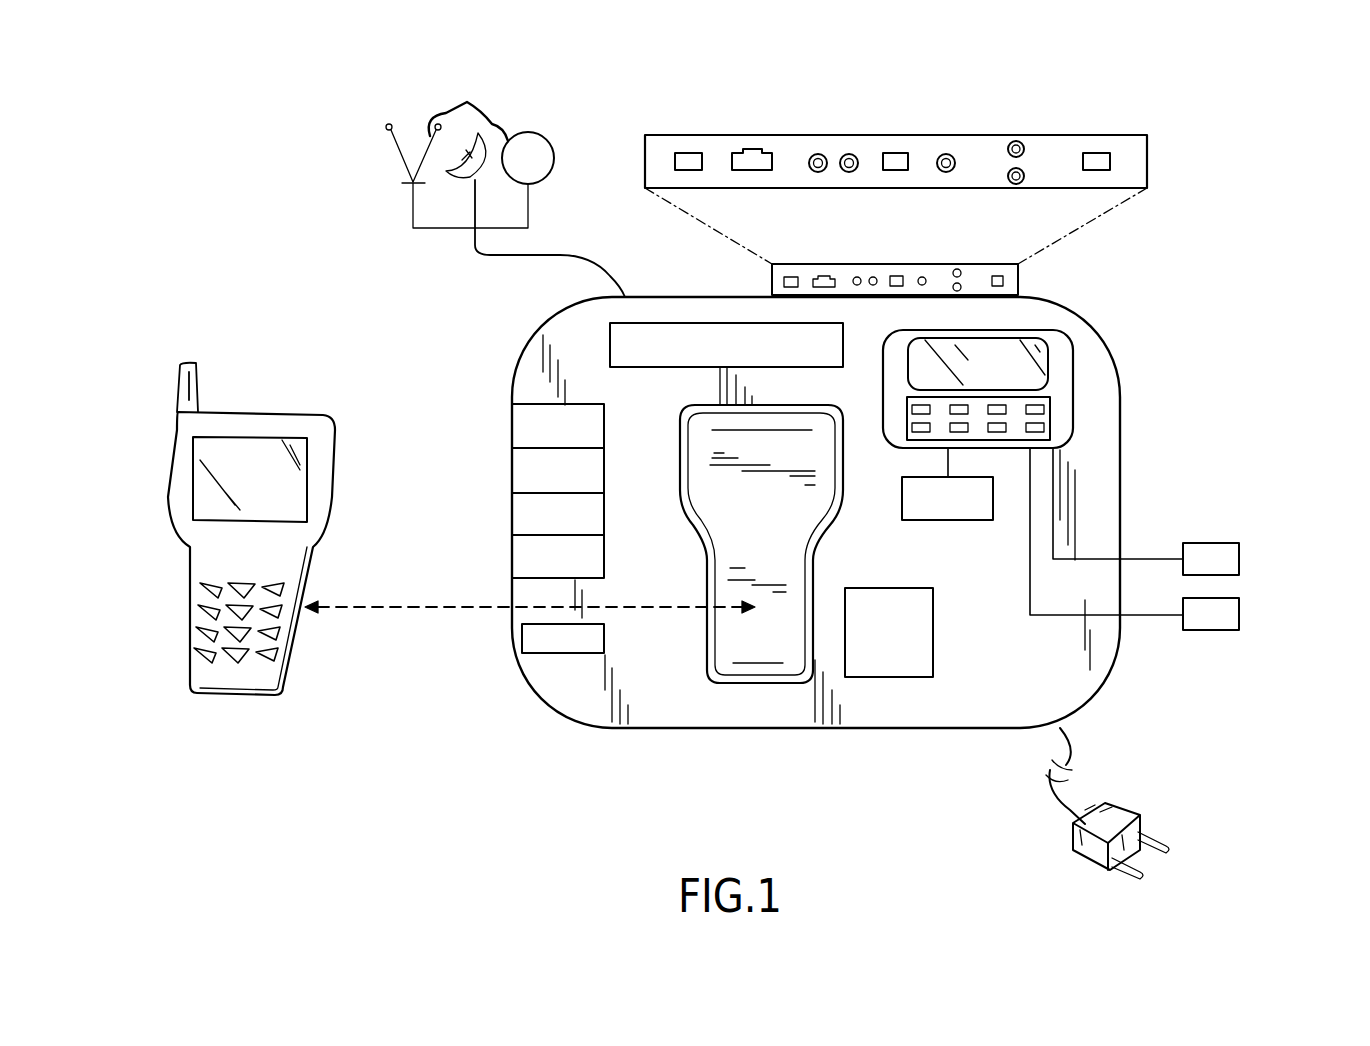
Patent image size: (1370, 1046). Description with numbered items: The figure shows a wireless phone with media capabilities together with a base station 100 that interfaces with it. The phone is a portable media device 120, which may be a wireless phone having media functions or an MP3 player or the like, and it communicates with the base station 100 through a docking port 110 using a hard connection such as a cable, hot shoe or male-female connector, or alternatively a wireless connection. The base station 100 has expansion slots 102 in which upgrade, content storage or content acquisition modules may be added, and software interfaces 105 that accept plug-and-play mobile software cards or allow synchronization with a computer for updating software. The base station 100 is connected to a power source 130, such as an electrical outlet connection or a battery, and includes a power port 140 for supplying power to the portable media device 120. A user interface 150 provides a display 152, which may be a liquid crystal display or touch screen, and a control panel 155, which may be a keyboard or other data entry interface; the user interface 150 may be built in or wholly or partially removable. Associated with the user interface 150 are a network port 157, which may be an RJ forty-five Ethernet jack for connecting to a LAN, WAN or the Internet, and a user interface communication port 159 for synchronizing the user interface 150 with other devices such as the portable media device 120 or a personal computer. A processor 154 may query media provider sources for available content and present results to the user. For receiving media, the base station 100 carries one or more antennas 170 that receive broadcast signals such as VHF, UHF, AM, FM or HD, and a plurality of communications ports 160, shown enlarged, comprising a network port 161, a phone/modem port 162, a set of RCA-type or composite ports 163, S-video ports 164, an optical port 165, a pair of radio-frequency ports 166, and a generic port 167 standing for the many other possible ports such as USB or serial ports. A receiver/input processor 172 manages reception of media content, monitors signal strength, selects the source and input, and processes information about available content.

The base station 100 is at (867, 728).
The expansion slots 102 is at (519, 555).
The software interfaces 105 is at (530, 642).
The docking port 110 is at (773, 683).
The portable media device 120 is at (295, 410).
The power source 130 is at (1130, 818).
The power port 140 is at (920, 678).
The user interface 150 is at (1033, 467).
The display 152 is at (1050, 352).
The processor 154 is at (938, 520).
The control panel 155 is at (1052, 425).
The network port 157 is at (1239, 614).
The user interface communication port 159 is at (1239, 558).
The communications ports 160 is at (1147, 157).
The network port 161 is at (692, 153).
The phone/modem port 162 is at (755, 149).
The RCA-type or composite ports 163 is at (849, 154).
The S-video ports 164 is at (896, 153).
The optical port 165 is at (946, 154).
The radio-frequency ports 166 is at (1012, 168).
The generic port 167 is at (1100, 153).
The antennas 170 is at (505, 183).
The receiver/input processor 172 is at (610, 340).